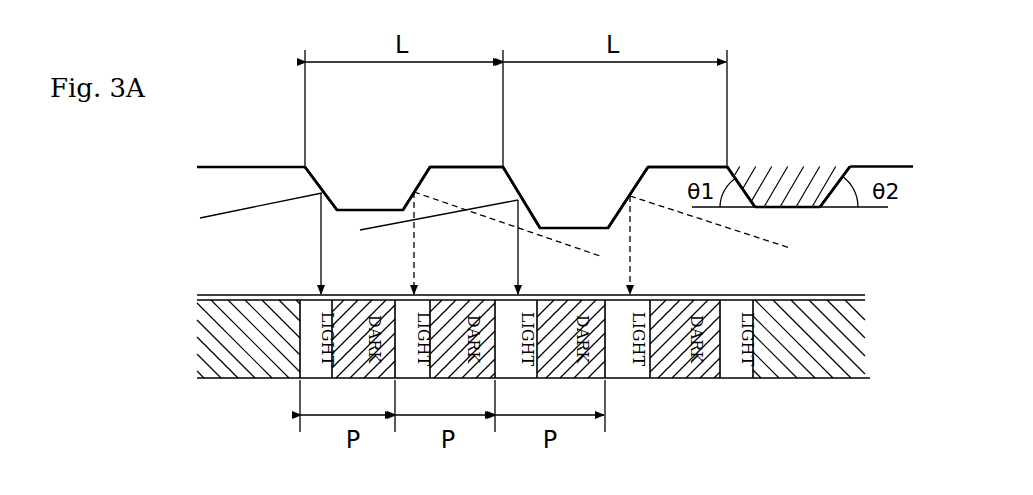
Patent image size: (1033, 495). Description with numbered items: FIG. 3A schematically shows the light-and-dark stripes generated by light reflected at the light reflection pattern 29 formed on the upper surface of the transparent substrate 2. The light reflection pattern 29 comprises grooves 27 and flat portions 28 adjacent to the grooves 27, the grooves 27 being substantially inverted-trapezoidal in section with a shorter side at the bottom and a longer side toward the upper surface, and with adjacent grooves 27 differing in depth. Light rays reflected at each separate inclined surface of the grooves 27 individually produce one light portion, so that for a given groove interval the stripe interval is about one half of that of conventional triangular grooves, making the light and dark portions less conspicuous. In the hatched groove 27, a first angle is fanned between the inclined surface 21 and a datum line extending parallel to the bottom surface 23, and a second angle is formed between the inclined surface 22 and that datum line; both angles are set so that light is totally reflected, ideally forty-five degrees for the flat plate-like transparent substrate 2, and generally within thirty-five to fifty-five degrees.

The transparent substrate 2 is at (236, 182).
The inclined surface 21 is at (745, 166).
The inclined surface 22 is at (828, 178).
The bottom surface 23 is at (800, 208).
The groove 27 is at (368, 200).
The flat portion 28 is at (471, 152).
The light reflection pattern 29 is at (495, 128).